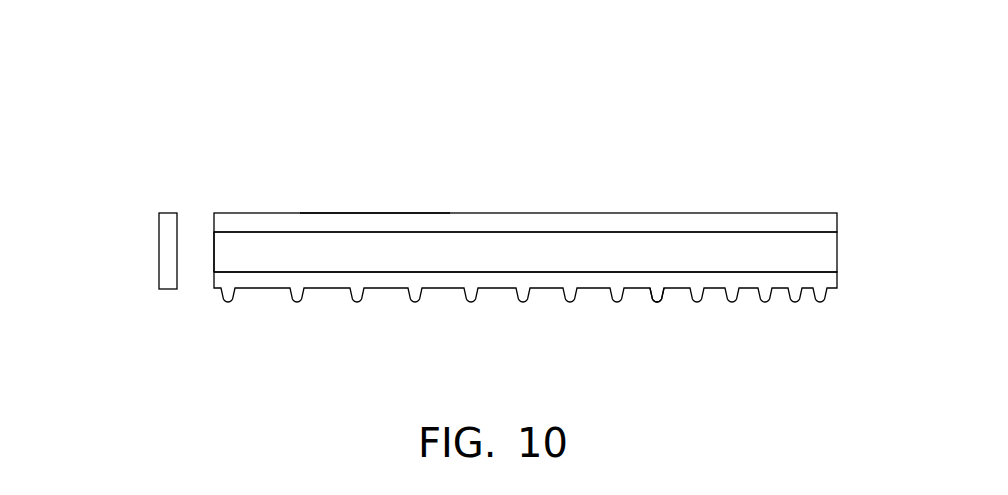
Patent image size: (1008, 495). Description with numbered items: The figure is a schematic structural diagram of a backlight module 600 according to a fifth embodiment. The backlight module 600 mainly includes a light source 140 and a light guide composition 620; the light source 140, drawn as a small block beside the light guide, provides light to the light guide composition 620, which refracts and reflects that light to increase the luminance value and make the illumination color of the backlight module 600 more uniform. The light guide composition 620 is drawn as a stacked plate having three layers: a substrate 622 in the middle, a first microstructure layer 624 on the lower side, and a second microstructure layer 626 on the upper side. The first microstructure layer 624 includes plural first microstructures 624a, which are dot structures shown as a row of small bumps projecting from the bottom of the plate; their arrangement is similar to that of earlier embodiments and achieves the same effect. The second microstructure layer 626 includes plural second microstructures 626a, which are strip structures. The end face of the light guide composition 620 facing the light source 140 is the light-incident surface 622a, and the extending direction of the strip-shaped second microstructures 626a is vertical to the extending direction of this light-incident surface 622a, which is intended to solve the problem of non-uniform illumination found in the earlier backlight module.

The backlight module 600 is at (108, 61).
The light source 140 is at (167, 250).
The light guide composition 620 is at (845, 112).
The second microstructure layer 626 is at (677, 222).
The substrate 622 is at (753, 250).
The first microstructure layer 624 is at (803, 280).
The light-incident surface 622a is at (213, 250).
The second microstructures 626a is at (377, 213).
The first microstructures 624a is at (658, 301).